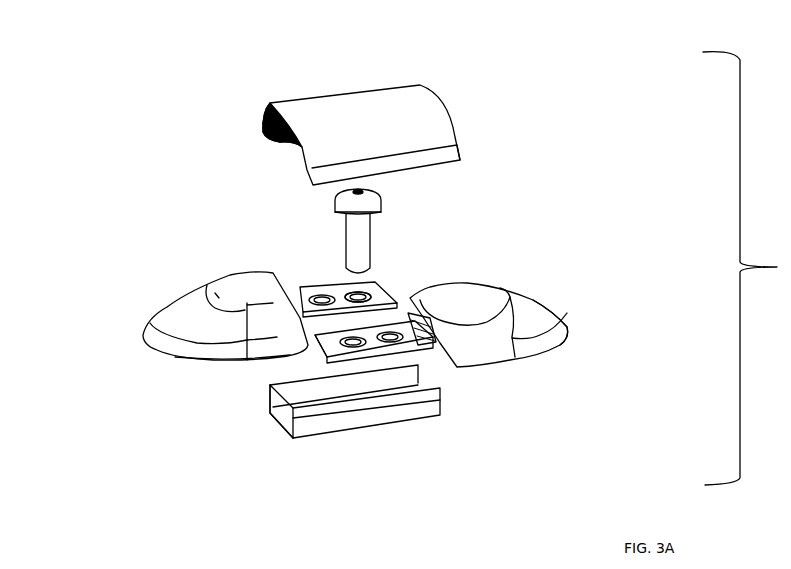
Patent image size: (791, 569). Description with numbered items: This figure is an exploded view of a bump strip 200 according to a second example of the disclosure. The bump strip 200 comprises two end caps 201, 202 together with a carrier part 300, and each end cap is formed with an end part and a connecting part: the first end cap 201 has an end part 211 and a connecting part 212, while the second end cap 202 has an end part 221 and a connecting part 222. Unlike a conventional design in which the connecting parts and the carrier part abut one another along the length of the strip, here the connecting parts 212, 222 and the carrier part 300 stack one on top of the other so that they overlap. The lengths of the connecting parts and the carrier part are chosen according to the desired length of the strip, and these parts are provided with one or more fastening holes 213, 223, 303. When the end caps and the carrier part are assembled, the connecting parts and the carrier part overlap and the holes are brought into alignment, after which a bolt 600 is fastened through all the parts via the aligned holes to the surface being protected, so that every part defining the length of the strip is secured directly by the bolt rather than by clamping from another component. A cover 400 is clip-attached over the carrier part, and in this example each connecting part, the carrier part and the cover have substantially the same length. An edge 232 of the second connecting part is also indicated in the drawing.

The bump strip 200 is at (138, 112).
The end cap 201 is at (192, 312).
The end cap 202 is at (527, 306).
The end part 211 is at (200, 358).
The connecting part 212 is at (315, 283).
The fastening hole 213 is at (387, 290).
The end part 221 is at (572, 332).
The connecting part 222 is at (374, 342).
The fastening hole 223 is at (420, 347).
The plate edge 232 is at (322, 358).
The carrier part 300 is at (441, 405).
The fastening hole 303 is at (268, 408).
The cover 400 is at (458, 127).
The bolt 600 is at (366, 236).